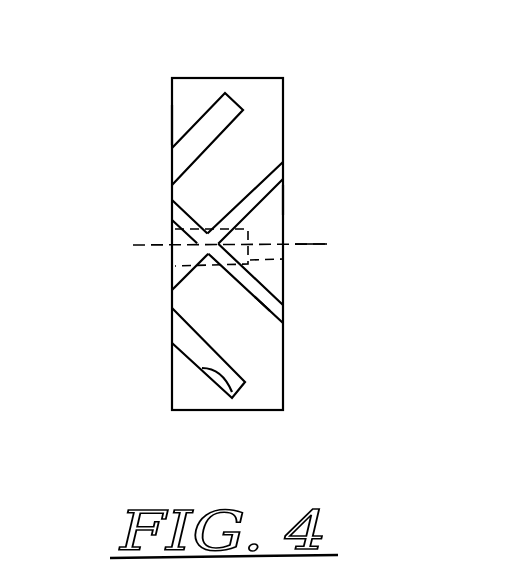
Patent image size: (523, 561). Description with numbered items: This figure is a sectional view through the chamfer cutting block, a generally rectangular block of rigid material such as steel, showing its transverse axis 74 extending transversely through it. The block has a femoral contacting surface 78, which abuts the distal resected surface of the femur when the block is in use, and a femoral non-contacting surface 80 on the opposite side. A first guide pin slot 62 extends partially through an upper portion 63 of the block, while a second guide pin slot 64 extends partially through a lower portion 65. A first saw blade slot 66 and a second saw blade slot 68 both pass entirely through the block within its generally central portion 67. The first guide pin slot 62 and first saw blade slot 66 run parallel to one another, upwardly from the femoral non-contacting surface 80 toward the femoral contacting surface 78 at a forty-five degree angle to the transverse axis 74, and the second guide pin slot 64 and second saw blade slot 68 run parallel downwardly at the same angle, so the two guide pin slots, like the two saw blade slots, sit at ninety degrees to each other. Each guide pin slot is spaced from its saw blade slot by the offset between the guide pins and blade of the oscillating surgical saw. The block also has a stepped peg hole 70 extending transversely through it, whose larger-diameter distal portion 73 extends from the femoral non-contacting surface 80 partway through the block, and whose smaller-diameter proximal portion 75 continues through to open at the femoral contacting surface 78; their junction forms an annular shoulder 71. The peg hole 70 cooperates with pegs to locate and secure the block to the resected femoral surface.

The first guide pin slot 62 is at (203, 118).
The upper portion 63 is at (171, 112).
The second guide pin slot 64 is at (236, 400).
The lower portion 65 is at (172, 377).
The first saw blade slot 66 is at (273, 171).
The central portion 67 is at (171, 189).
The second saw blade slot 68 is at (272, 312).
The peg hole 70 is at (200, 280).
The annular shoulder 71 is at (263, 298).
The distal portion 73 is at (172, 253).
The transverse axis 74 is at (303, 246).
The proximal portion 75 is at (248, 230).
The femoral contacting surface 78 is at (296, 196).
The femoral non-contacting surface 80 is at (162, 130).